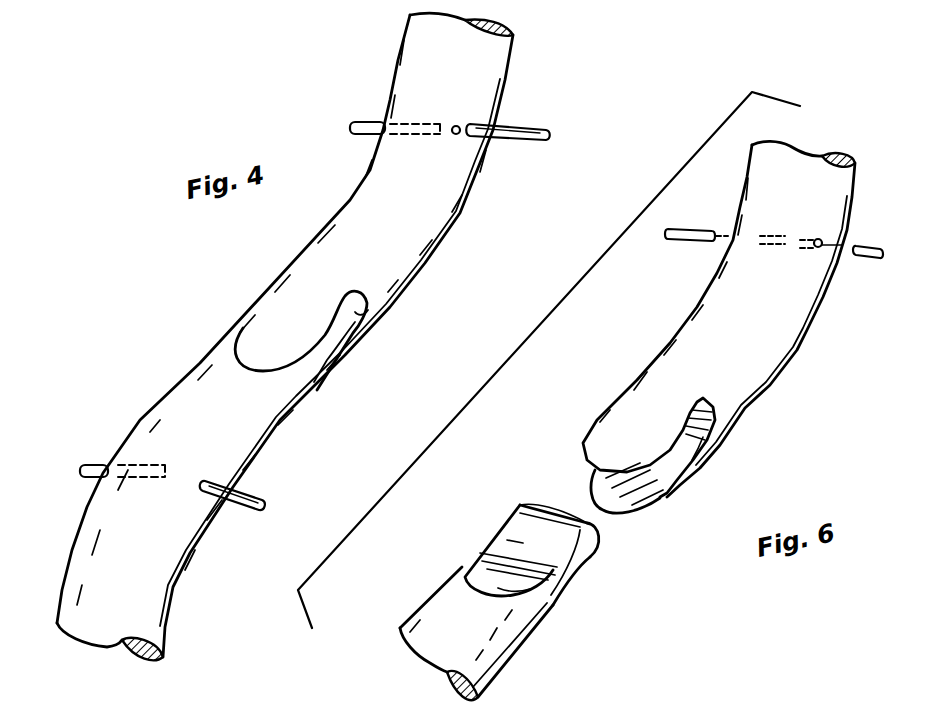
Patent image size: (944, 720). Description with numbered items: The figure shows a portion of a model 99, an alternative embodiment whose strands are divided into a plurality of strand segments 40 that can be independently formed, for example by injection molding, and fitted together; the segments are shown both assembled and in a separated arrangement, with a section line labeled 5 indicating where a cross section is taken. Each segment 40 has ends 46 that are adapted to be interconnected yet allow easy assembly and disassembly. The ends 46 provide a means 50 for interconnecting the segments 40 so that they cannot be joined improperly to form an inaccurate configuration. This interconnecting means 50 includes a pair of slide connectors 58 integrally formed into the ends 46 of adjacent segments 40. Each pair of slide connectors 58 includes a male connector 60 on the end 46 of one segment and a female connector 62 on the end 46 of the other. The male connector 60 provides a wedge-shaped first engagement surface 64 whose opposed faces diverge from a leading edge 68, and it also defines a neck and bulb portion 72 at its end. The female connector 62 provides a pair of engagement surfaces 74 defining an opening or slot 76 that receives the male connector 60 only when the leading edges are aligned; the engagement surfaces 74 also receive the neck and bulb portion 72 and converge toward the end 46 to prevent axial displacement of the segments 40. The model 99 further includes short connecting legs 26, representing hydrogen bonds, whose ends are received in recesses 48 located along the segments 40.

In FIG. 4, the section line 5- 5 is at (220, 272).
In FIG. 4, the connecting legs 26 is at (368, 120).
In FIG. 6, the connecting legs 26 is at (698, 228).
In FIG. 4, the strand segments 40 is at (440, 170).
In FIG. 4, the ends 46 is at (282, 292).
In FIG. 6, the ends 46 is at (605, 424).
In FIG. 4, the recesses 48 is at (457, 126).
In FIG. 6, the recesses 48 is at (820, 239).
In FIG. 4, the means for interconnecting 50 is at (458, 256).
In FIG. 6, the slide connectors 58 is at (612, 556).
In FIG. 6, the male connector 60 is at (517, 533).
In FIG. 6, the female connector 62 is at (645, 500).
In FIG. 6, the first engagement surface 64 is at (550, 592).
In FIG. 6, the leading edge 68 is at (598, 550).
In FIG. 6, the neck and bulb portion 72 is at (532, 486).
In FIG. 6, the engagement surfaces 74 is at (700, 415).
In FIG. 6, the opening or slot 76 is at (700, 436).
In FIG. 4, the model 99 is at (562, 66).